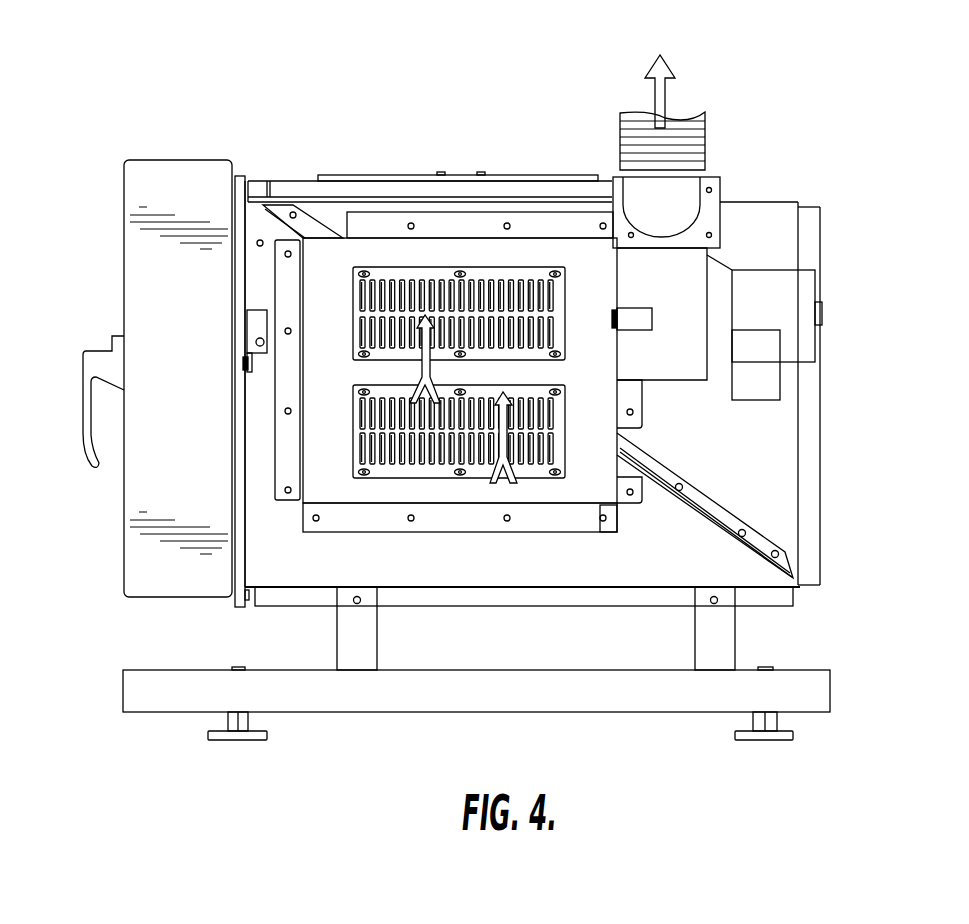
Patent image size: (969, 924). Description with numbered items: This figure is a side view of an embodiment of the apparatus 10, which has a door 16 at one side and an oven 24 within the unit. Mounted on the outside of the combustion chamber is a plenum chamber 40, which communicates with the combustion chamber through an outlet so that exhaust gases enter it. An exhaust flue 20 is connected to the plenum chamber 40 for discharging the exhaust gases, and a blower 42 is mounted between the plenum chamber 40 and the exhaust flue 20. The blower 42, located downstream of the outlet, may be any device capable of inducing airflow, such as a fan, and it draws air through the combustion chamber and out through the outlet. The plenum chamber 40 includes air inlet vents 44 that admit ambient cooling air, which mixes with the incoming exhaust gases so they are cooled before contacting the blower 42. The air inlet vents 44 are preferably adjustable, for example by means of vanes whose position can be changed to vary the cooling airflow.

The apparatus 10 is at (180, 97).
The door 16 is at (124, 292).
The exhaust flue 20 is at (705, 137).
The oven 24 is at (353, 176).
The plenum chamber 40 is at (315, 485).
The blower 42 is at (698, 366).
The air inlet vents 44 is at (358, 481).